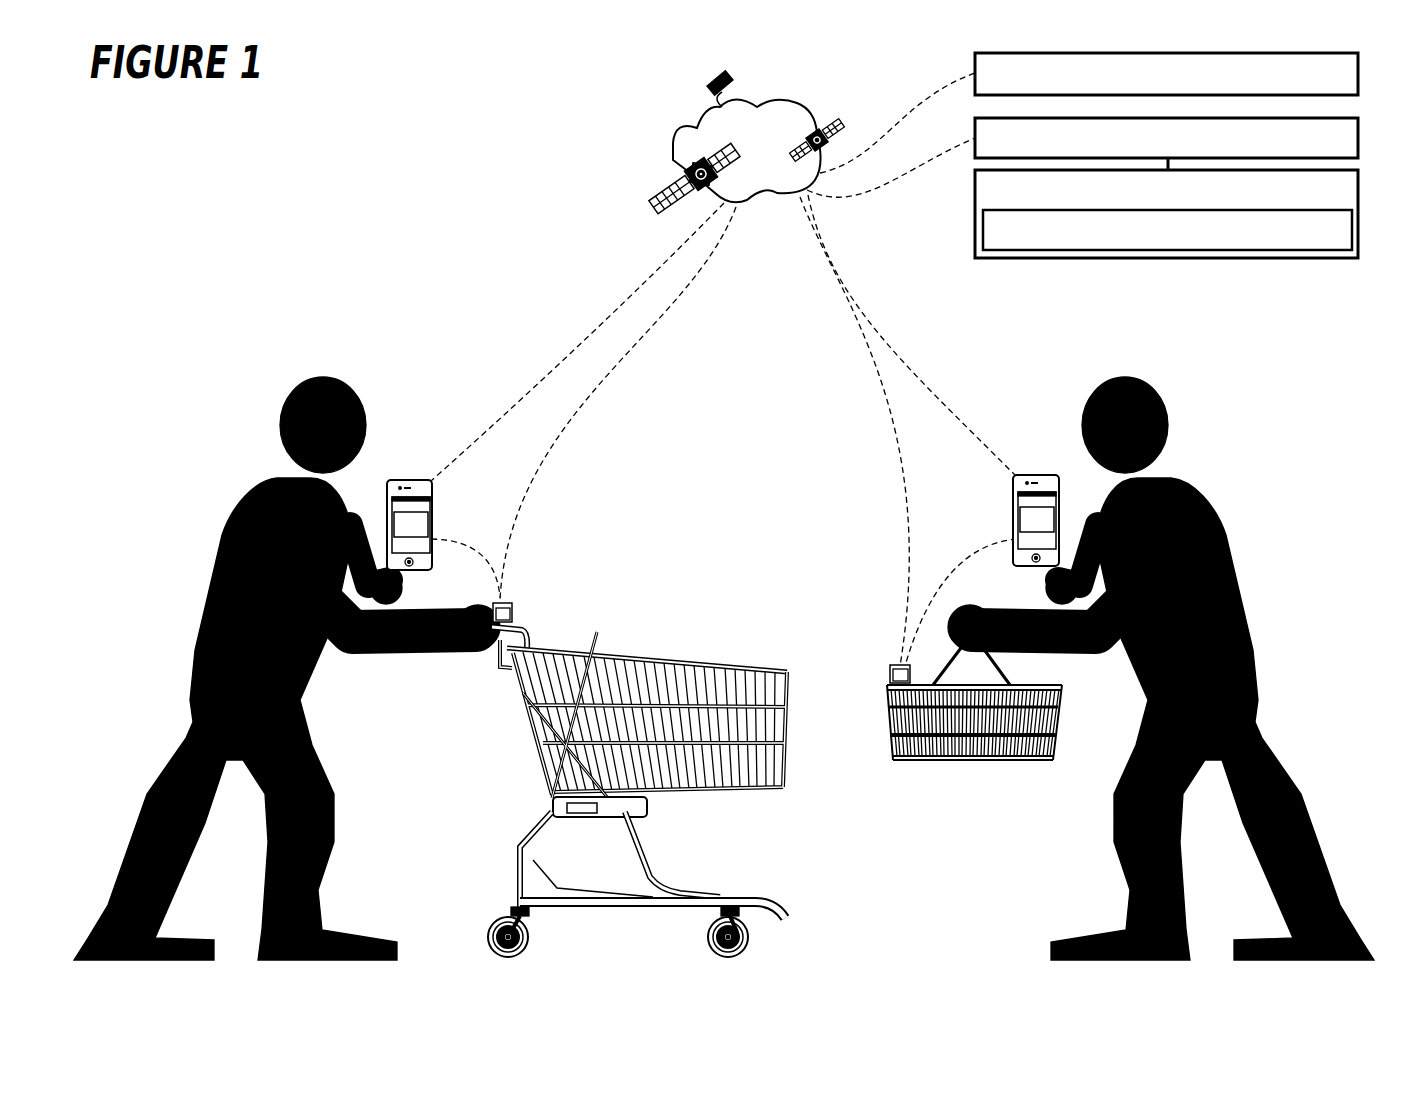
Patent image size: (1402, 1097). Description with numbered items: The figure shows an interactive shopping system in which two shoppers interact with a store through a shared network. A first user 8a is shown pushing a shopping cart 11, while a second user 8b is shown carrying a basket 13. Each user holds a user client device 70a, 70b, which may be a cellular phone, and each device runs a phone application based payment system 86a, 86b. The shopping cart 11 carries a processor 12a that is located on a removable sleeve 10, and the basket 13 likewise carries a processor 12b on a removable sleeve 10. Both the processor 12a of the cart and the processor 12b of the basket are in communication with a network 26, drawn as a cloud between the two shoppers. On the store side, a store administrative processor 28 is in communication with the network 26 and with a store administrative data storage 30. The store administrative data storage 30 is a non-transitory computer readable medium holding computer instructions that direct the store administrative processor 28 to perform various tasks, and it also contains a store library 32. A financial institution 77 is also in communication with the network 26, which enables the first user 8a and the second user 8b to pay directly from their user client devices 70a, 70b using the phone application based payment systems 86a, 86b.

The user 8a is at (222, 543).
The user 8b is at (1226, 544).
The removable sleeve 10 is at (701, 619).
The processor 12a is at (512, 614).
The processor 12b is at (890, 675).
The shopping cart 11 is at (708, 662).
The basket 13 is at (973, 760).
The network 26 is at (797, 105).
The user client device 70a is at (431, 525).
The user client device 70b is at (1012, 520).
The phone application based payment system 86a is at (411, 524).
The phone application based payment system 86b is at (1037, 519).
The financial institution 77 is at (1364, 64).
The store administrative processor 28 is at (1364, 130).
The store administrative data storage 30 is at (1364, 180).
The store library 32 is at (1352, 233).